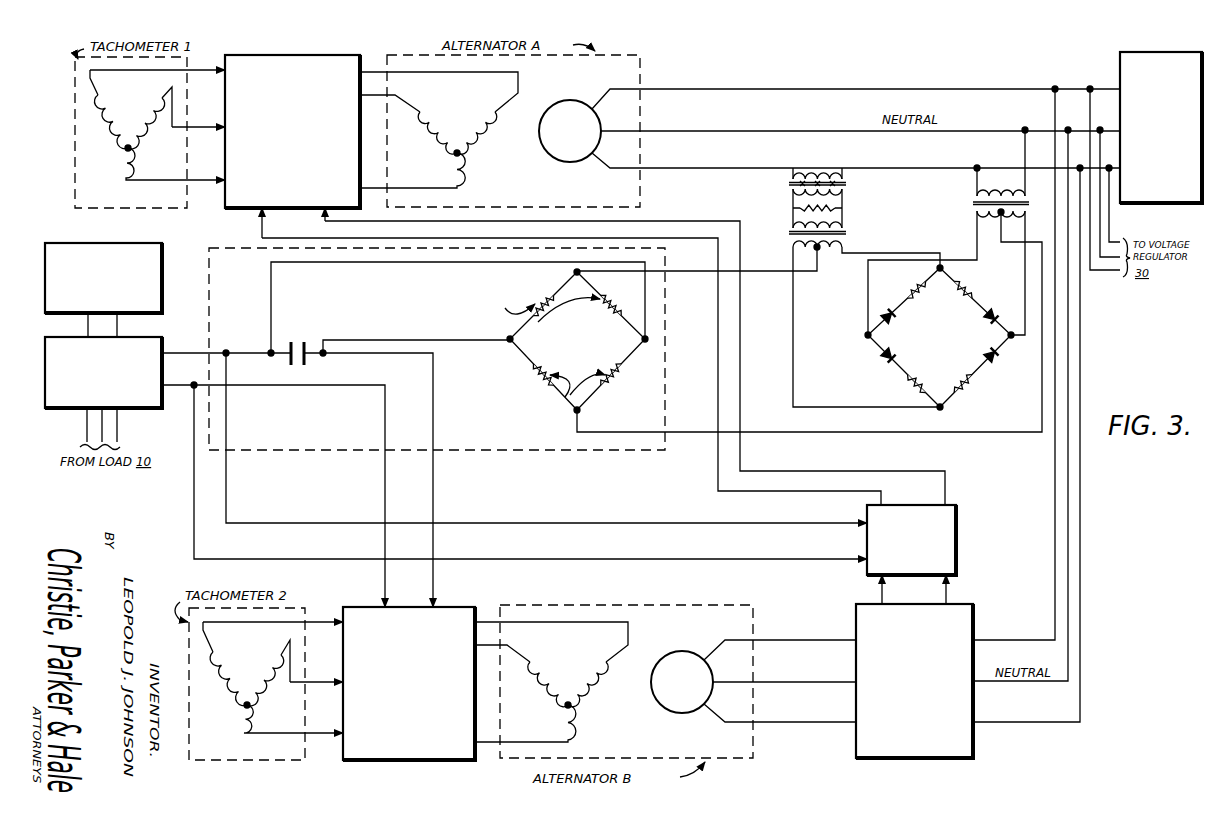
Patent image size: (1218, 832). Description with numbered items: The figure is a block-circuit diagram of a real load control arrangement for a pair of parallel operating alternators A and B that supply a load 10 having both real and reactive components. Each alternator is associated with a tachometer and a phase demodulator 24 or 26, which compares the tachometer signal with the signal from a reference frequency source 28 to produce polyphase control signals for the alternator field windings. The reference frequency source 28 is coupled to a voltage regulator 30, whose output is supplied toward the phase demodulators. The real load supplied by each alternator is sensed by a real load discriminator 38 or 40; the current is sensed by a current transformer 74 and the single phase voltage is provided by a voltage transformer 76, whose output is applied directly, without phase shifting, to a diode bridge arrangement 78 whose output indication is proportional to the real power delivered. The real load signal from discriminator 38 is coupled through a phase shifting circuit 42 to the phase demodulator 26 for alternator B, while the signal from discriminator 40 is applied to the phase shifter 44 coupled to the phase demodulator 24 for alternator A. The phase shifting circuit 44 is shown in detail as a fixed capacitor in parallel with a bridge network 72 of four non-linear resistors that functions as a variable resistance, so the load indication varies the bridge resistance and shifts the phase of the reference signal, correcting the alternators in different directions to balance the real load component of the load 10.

The load 10 is at (1170, 51).
The phase demodulator 24 is at (271, 55).
The phase demodulator 26 is at (452, 607).
The reference frequency source 28 is at (162, 274).
The voltage regulator 30 is at (162, 347).
The real load discriminator 38 is at (809, 281).
The real load discriminator 40 is at (975, 623).
The phase shifting circuit 42 is at (958, 540).
The phase shifting circuit 44 is at (455, 349).
The bridge network 72 is at (577, 341).
The current transformer 74 is at (807, 209).
The voltage transformer 76 is at (989, 173).
The diode bridge arrangement 78 is at (939, 337).